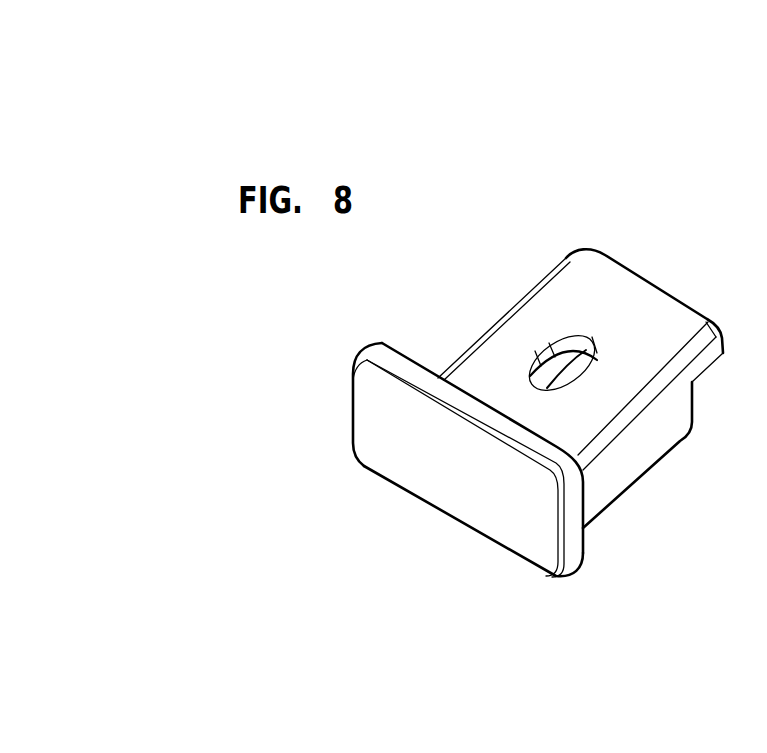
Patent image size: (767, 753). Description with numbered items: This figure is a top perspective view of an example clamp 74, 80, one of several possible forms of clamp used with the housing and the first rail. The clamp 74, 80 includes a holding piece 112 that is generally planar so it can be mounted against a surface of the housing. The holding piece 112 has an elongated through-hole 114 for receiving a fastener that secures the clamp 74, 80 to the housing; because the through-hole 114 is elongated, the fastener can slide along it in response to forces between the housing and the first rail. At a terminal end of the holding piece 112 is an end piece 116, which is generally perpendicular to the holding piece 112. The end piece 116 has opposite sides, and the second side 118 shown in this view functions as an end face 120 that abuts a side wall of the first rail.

The clamp 74 is at (515, 331).
The clamp 80 is at (515, 417).
The holding piece 112 is at (603, 270).
The elongated through-hole 114 is at (552, 358).
The end piece 116 is at (440, 494).
The second side 118 is at (513, 535).
The end face 120 is at (368, 444).